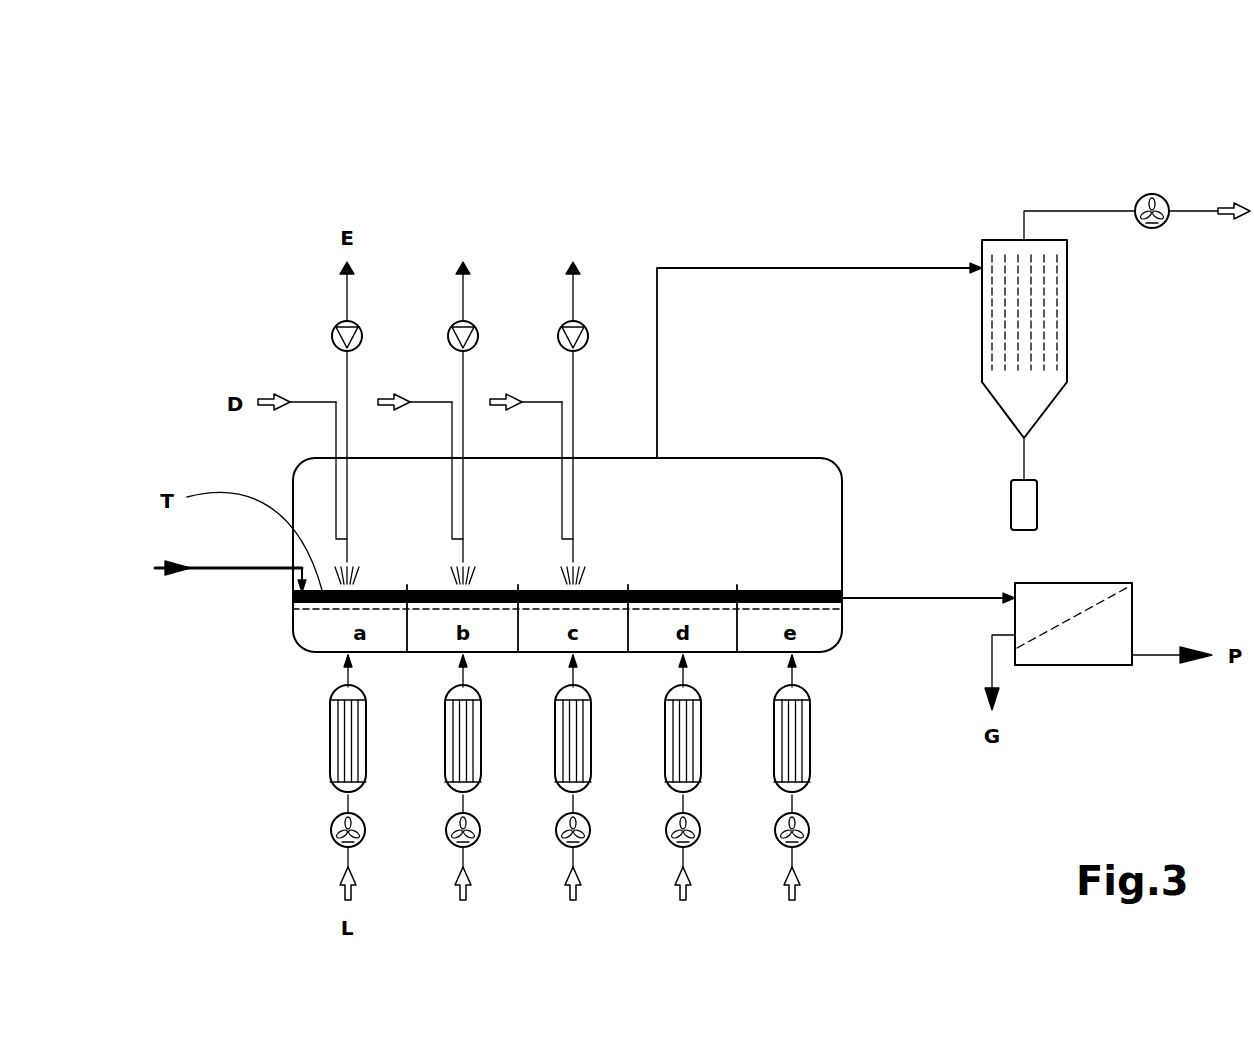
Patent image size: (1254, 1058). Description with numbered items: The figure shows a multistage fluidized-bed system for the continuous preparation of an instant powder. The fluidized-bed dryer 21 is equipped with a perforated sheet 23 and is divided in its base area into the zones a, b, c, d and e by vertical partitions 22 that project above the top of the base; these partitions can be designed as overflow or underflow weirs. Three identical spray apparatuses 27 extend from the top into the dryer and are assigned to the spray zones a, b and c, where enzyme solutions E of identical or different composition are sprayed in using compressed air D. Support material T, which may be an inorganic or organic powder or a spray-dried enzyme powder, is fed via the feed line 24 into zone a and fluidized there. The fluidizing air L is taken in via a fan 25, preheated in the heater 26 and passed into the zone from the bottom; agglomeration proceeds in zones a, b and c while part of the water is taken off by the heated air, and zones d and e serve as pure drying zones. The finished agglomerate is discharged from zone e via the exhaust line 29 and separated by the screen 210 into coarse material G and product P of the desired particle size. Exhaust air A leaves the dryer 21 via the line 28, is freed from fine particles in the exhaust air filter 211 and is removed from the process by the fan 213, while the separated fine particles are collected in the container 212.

The fluidized-bed dryer 21 is at (697, 527).
The vertical partitions 22 is at (407, 622).
The perforated sheet 23 is at (338, 612).
The feed line 24 is at (250, 570).
The fan 25 is at (332, 838).
The heater 26 is at (348, 745).
The spray apparatuses 27 is at (347, 382).
The line 28 is at (726, 268).
The exhaust line 29 is at (883, 598).
The screen 210 is at (1060, 645).
The exhaust air filter 211 is at (1045, 385).
The container 212 is at (1025, 512).
The fan 213 is at (1147, 195).